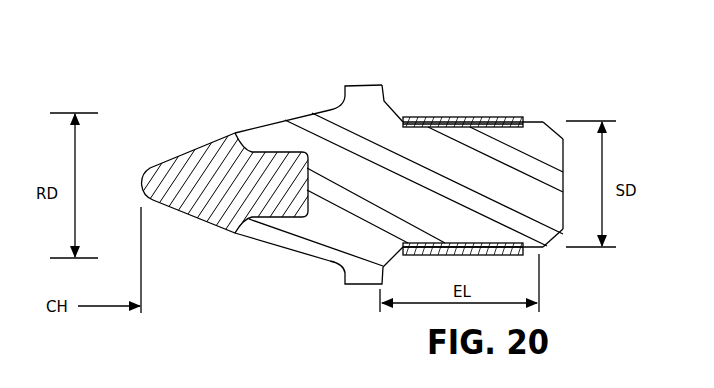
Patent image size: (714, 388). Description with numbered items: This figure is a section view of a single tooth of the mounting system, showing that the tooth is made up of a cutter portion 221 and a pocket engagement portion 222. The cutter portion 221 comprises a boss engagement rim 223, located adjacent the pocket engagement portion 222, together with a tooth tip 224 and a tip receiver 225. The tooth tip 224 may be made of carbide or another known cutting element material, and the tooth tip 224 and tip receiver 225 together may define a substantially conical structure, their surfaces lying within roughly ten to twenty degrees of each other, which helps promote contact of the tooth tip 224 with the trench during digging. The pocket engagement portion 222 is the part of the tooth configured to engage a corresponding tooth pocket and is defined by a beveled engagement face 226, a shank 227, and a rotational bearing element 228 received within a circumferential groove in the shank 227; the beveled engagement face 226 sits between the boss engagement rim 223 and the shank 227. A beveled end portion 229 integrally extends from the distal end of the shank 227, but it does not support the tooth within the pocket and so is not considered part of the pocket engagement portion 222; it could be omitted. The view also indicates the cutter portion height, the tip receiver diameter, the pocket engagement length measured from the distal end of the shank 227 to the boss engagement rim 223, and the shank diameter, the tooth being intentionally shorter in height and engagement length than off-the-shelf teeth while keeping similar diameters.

The cutter portion 221 is at (192, 107).
The pocket engagement portion 222 is at (473, 75).
The boss engagement rim 223 is at (357, 82).
The tooth tip 224 is at (173, 160).
The tip receiver 225 is at (278, 249).
The beveled engagement face 226 is at (385, 99).
The shank 227 is at (536, 117).
The rotational bearing element 228 is at (447, 112).
The beveled end portion 229 is at (554, 244).